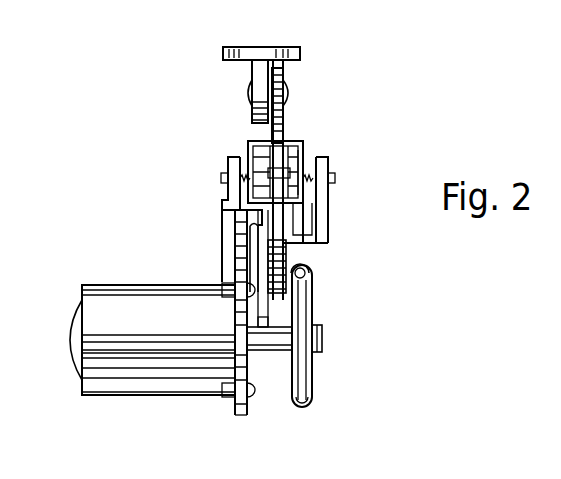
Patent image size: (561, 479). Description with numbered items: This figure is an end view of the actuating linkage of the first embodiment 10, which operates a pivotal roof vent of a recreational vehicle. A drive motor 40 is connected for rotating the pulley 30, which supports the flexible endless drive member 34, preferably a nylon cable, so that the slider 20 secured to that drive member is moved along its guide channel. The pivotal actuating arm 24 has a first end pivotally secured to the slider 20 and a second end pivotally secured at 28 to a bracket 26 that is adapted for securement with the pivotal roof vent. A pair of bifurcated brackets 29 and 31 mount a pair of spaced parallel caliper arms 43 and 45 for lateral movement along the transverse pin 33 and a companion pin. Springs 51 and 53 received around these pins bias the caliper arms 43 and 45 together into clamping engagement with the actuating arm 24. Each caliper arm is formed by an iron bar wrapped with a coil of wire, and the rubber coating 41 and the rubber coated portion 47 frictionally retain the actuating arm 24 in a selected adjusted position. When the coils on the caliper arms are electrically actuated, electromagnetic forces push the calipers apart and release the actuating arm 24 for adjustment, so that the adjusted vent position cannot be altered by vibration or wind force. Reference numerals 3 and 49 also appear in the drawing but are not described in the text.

The section line 3 is at (363, 0).
The bifurcated bracket 31 is at (549, 6).
The first embodiment 10 is at (149, 128).
The bracket 26 is at (224, 48).
The rubber coated portion 47 is at (250, 126).
The pivotal securement 28 is at (303, 84).
The caliper arm 45 is at (248, 143).
The rubber coating 41 is at (298, 141).
The caliper arm 43 is at (304, 160).
The spring 53 is at (246, 172).
The transverse pin 33 is at (329, 187).
The spring 51 is at (322, 197).
The bifurcated bracket 29 is at (323, 218).
The slider 20 is at (226, 210).
The gear plate 49 is at (225, 230).
The pivotal actuating arm 24 is at (287, 253).
The flexible endless drive member 34 is at (313, 297).
The pulley 30 is at (313, 365).
The drive motor 40 is at (170, 308).